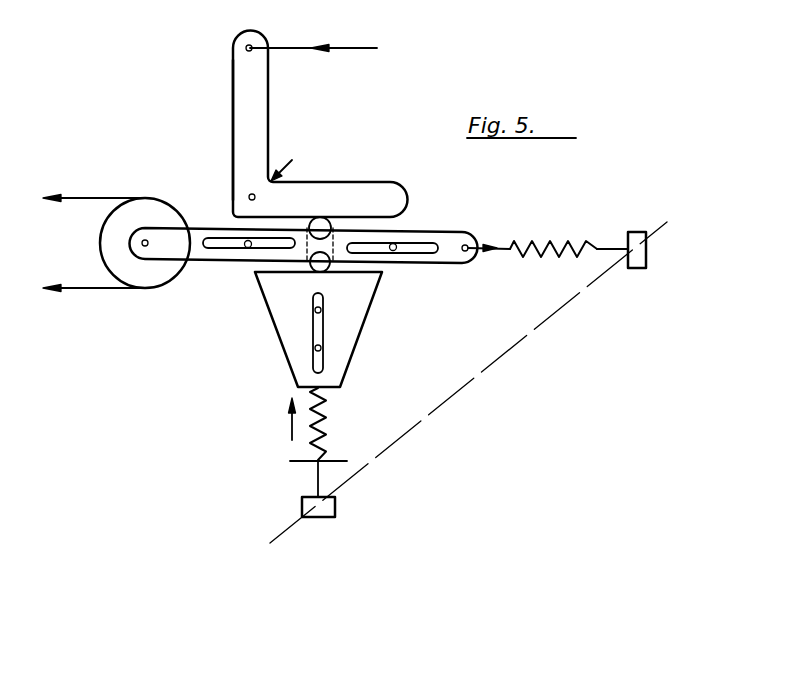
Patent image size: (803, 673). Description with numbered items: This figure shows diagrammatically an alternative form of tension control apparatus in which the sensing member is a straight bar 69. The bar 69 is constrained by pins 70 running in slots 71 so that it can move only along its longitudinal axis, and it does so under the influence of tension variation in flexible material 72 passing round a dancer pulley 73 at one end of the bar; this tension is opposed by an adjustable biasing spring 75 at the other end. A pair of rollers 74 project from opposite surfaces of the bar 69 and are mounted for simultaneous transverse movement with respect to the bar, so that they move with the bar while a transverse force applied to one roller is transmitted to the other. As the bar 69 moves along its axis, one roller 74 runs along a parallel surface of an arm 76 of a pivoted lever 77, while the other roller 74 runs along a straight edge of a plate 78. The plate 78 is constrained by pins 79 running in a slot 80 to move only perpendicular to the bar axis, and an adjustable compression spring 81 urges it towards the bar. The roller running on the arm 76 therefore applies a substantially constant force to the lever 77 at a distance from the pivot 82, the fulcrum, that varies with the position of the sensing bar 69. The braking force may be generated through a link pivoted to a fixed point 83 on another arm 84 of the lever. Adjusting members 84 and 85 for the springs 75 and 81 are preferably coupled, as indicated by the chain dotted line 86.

The straight bar 69 is at (192, 260).
The pins 70 is at (246, 242).
The slots 71 is at (243, 250).
The flexible material 72 is at (91, 229).
The dancer pulley 73 is at (138, 201).
The rollers 74 is at (323, 220).
The adjustable biasing spring 75 is at (540, 257).
The arm 76 is at (392, 190).
The pivoted lever 77 is at (292, 160).
The plate 78 is at (290, 354).
The pins 79 is at (322, 312).
The slot 80 is at (316, 332).
The adjustable compression spring 81 is at (332, 438).
The pivot 82 is at (249, 197).
The fixed point 83 is at (246, 48).
The arm 84 is at (235, 88).
The adjusting member 85 is at (302, 506).
The chain dotted line 86 is at (448, 403).